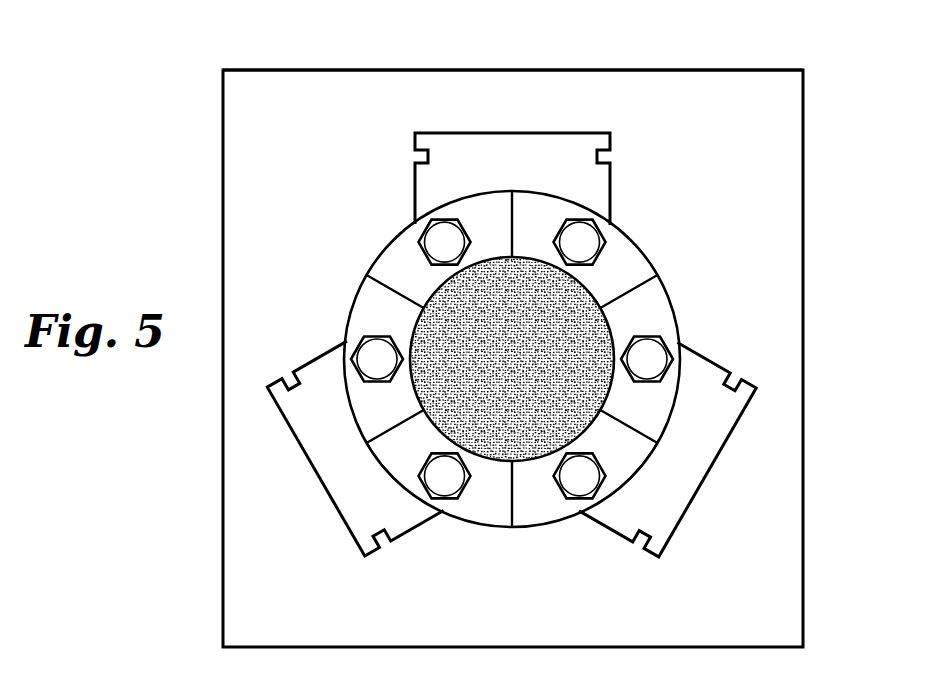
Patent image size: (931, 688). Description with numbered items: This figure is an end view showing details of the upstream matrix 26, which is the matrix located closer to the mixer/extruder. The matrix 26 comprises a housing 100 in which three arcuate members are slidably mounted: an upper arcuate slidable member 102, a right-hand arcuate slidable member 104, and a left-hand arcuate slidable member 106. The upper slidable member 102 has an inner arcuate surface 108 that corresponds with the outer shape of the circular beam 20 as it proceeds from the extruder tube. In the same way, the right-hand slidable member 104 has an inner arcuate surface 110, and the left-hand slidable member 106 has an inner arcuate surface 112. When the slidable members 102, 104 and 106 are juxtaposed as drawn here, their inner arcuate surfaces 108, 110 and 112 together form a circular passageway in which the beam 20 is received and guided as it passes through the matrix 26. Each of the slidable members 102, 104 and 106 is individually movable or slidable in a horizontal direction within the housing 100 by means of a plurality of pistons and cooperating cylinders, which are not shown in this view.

The upstream matrix 26 is at (733, 70).
The housing 100 is at (767, 130).
The upper arcuate slidable member 102 is at (618, 262).
The right-hand arcuate slidable member 104 is at (647, 310).
The left-hand arcuate slidable member 106 is at (370, 313).
The inner arcuate surface 108 is at (508, 256).
The inner arcuate surface 110 is at (598, 420).
The inner arcuate surface 112 is at (430, 426).
The circular beam 20 is at (490, 420).